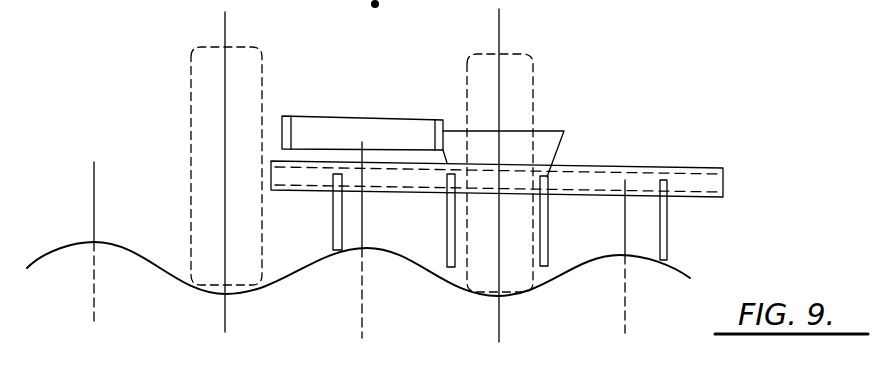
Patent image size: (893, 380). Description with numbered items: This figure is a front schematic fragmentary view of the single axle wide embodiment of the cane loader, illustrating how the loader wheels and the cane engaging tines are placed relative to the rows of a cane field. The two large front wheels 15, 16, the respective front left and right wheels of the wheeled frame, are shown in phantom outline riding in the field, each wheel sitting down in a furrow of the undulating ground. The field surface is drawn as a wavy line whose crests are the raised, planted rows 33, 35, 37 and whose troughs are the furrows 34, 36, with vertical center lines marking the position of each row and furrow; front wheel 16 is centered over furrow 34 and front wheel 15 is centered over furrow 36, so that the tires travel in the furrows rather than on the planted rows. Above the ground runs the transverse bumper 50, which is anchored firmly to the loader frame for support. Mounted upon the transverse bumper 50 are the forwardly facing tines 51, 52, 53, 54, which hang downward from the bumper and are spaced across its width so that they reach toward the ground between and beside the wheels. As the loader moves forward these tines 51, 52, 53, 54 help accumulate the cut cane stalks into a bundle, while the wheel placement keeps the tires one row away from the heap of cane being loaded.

The front wheel 15 is at (534, 70).
The front wheel 16 is at (205, 79).
The raised/planted row 33 is at (94, 305).
The furrow 34 is at (225, 313).
The raised/planted row 35 is at (362, 320).
The furrow 36 is at (499, 325).
The raised/planted row 37 is at (625, 310).
The transverse bumper 50 is at (645, 182).
The tine 51 is at (333, 228).
The tine 52 is at (447, 222).
The tine 53 is at (548, 210).
The tine 54 is at (667, 230).